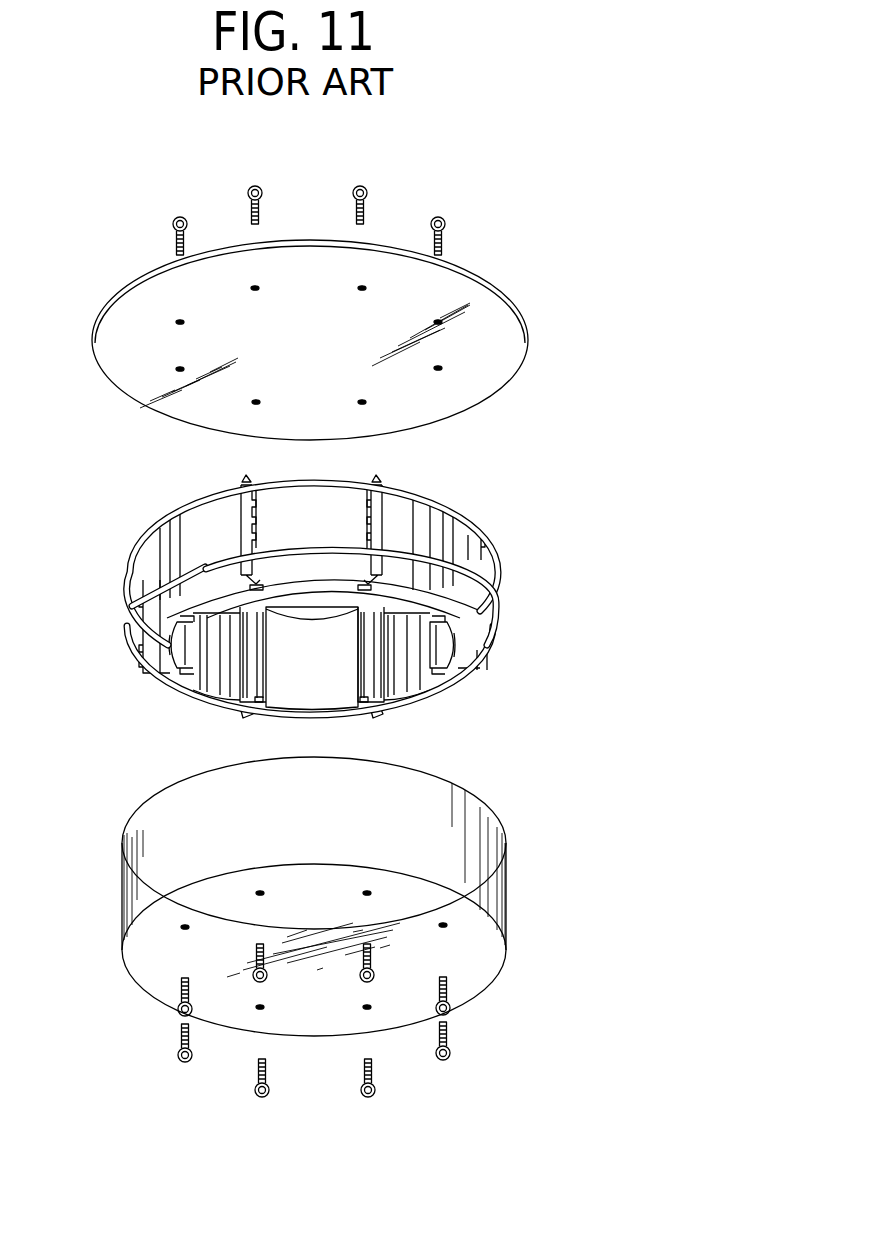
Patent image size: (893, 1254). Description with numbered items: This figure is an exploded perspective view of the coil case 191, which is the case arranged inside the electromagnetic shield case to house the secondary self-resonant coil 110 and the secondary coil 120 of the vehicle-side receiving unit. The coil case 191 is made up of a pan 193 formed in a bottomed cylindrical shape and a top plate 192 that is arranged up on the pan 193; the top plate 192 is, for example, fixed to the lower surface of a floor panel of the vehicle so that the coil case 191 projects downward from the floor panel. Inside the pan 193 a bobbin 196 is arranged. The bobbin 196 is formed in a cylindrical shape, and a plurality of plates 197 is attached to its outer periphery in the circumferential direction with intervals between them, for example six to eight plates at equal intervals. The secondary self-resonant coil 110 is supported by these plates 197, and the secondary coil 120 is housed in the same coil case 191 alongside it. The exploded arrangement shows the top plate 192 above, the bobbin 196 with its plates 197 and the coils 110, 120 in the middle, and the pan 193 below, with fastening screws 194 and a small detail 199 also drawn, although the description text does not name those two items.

The coil case 191 is at (551, 197).
The top plate 192 is at (466, 393).
The pan 193 is at (492, 877).
The screws 194 is at (367, 190).
The secondary self-resonant coil 110 is at (130, 605).
The secondary coil 120 is at (206, 489).
The bobbin 196 is at (307, 505).
The plates 197 is at (377, 487).
The coil bracket 199 is at (443, 643).